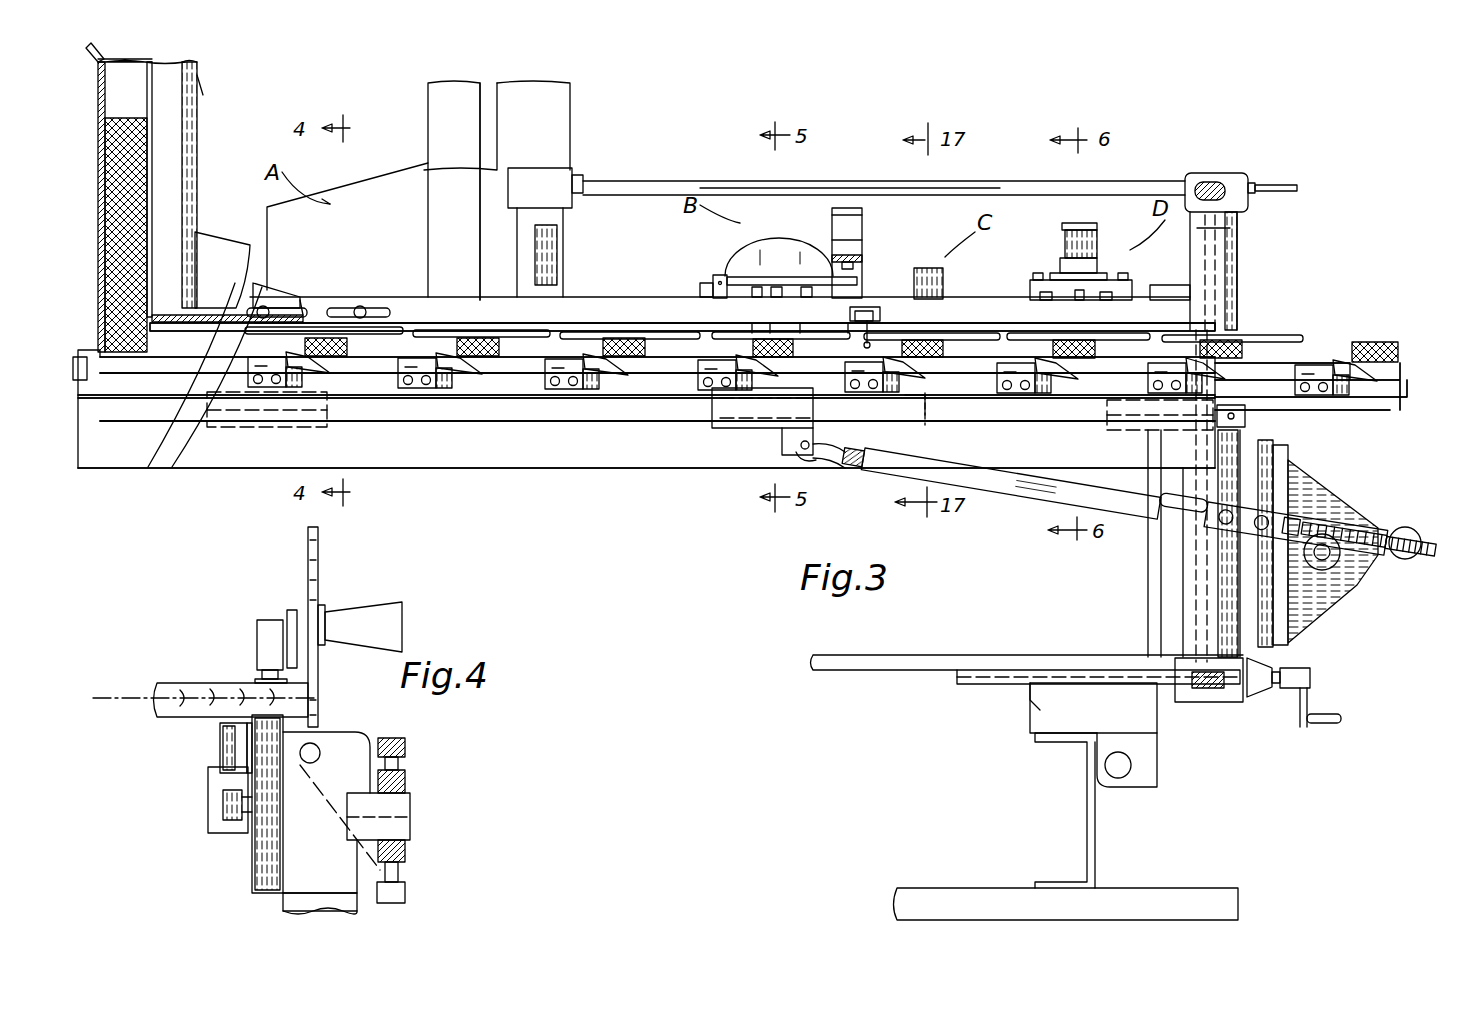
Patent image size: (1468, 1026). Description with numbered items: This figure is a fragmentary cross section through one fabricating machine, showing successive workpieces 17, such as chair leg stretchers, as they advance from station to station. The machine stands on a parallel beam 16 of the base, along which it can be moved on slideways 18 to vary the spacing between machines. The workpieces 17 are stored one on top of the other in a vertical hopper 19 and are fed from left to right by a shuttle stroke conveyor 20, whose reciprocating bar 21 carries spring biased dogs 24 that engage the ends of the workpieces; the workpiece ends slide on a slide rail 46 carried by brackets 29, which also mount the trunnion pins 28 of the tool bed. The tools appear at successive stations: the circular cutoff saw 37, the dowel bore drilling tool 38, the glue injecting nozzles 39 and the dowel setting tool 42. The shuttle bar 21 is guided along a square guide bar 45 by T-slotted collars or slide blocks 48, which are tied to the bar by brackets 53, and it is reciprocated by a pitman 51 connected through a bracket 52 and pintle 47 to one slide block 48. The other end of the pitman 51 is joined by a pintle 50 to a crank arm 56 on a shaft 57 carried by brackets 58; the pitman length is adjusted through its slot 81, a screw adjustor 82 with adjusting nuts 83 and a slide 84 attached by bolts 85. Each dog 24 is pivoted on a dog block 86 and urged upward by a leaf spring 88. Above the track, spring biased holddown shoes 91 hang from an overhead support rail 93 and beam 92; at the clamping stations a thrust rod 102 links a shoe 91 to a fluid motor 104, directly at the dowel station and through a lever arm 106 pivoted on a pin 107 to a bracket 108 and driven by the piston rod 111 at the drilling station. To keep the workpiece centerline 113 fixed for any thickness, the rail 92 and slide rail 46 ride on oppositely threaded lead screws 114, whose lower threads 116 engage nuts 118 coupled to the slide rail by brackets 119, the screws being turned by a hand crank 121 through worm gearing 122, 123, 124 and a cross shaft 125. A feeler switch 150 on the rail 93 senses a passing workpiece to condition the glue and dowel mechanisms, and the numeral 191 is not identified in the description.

In FIG. 3, the beam 16 is at (1092, 815).
In FIG. 3, the workpiece 17 is at (135, 158).
In FIG. 3, the slideway 18 is at (1035, 725).
In FIG. 3, the vertical hopper 19 is at (95, 50).
In FIG. 3, the shuttle stroke conveyor 20 is at (1092, 397).
In FIG. 3, the reciprocating bar 21 is at (475, 383).
In FIG. 3, the dog 24 is at (1335, 362).
In FIG. 4, the dog 24 is at (245, 738).
In FIG. 4, the trunnion pin 28 is at (315, 748).
In FIG. 4, the bracket 29 is at (345, 908).
In FIG. 3, the circular cutoff saw 37 is at (395, 358).
In FIG. 4, the circular cutoff saw 37 is at (318, 571).
In FIG. 3, the dowel bore drilling tool 38 is at (763, 255).
In FIG. 3, the glue injecting nozzle 39 is at (957, 405).
In FIG. 3, the dowel setting tool 42 is at (1165, 295).
In FIG. 3, the guide bar 45 is at (592, 397).
In FIG. 4, the guide bar 45 is at (223, 797).
In FIG. 3, the slide rail 46 is at (178, 460).
In FIG. 4, the slide rail 46 is at (260, 878).
In FIG. 3, the pintle 47 is at (818, 443).
In FIG. 3, the slide block 48 is at (285, 417).
In FIG. 4, the slide block 48 is at (208, 819).
In FIG. 3, the pintle 50 is at (1402, 553).
In FIG. 3, the pitman 51 is at (1020, 473).
In FIG. 3, the bracket 52 is at (772, 415).
In FIG. 3, the bracket 53 is at (280, 357).
In FIG. 3, the crank arm 56 is at (1343, 562).
In FIG. 3, the shaft 57 is at (1318, 558).
In FIG. 3, the bracket 58 is at (1290, 482).
In FIG. 3, the slot 81 is at (1163, 513).
In FIG. 3, the screw adjustor 82 is at (1330, 532).
In FIG. 3, the adjusting nut 83 is at (1385, 535).
In FIG. 3, the slide 84 is at (1248, 520).
In FIG. 3, the bolt 85 is at (1226, 515).
In FIG. 3, the dog block 86 is at (445, 388).
In FIG. 4, the dog block 86 is at (222, 748).
In FIG. 3, the leaf spring 88 is at (915, 390).
In FIG. 3, the holddown shoe 91 is at (983, 338).
In FIG. 4, the beam 92 is at (292, 610).
In FIG. 3, the support rail 93 is at (1237, 324).
In FIG. 4, the support rail 93 is at (257, 631).
In FIG. 3, the thrust rod 102 is at (778, 297).
In FIG. 3, the fluid motor 104 is at (860, 219).
In FIG. 3, the lever arm 106 is at (747, 275).
In FIG. 3, the pin 107 is at (715, 276).
In FIG. 3, the bracket 108 is at (708, 290).
In FIG. 3, the piston rod 111 is at (856, 270).
In FIG. 4, the centerline 113 is at (117, 693).
In FIG. 3, the lead screw 114 is at (1185, 606).
In FIG. 4, the lead screw 114 is at (405, 744).
In FIG. 4, the threaded end 116 is at (405, 774).
In FIG. 4, the nut 118 is at (410, 811).
In FIG. 4, the bracket 119 is at (295, 895).
In FIG. 3, the hand crank 121 is at (1310, 702).
In FIG. 3, the worm and worm wheel gears 122 is at (1197, 703).
In FIG. 3, the worm and worm wheel gears 123 is at (1224, 173).
In FIG. 3, the worm and worm wheel gears 124 is at (570, 170).
In FIG. 3, the cross shaft 125 is at (844, 182).
In FIG. 3, the feeler switch 150 is at (882, 316).
In FIG. 3, the lower column 191 is at (530, 325).